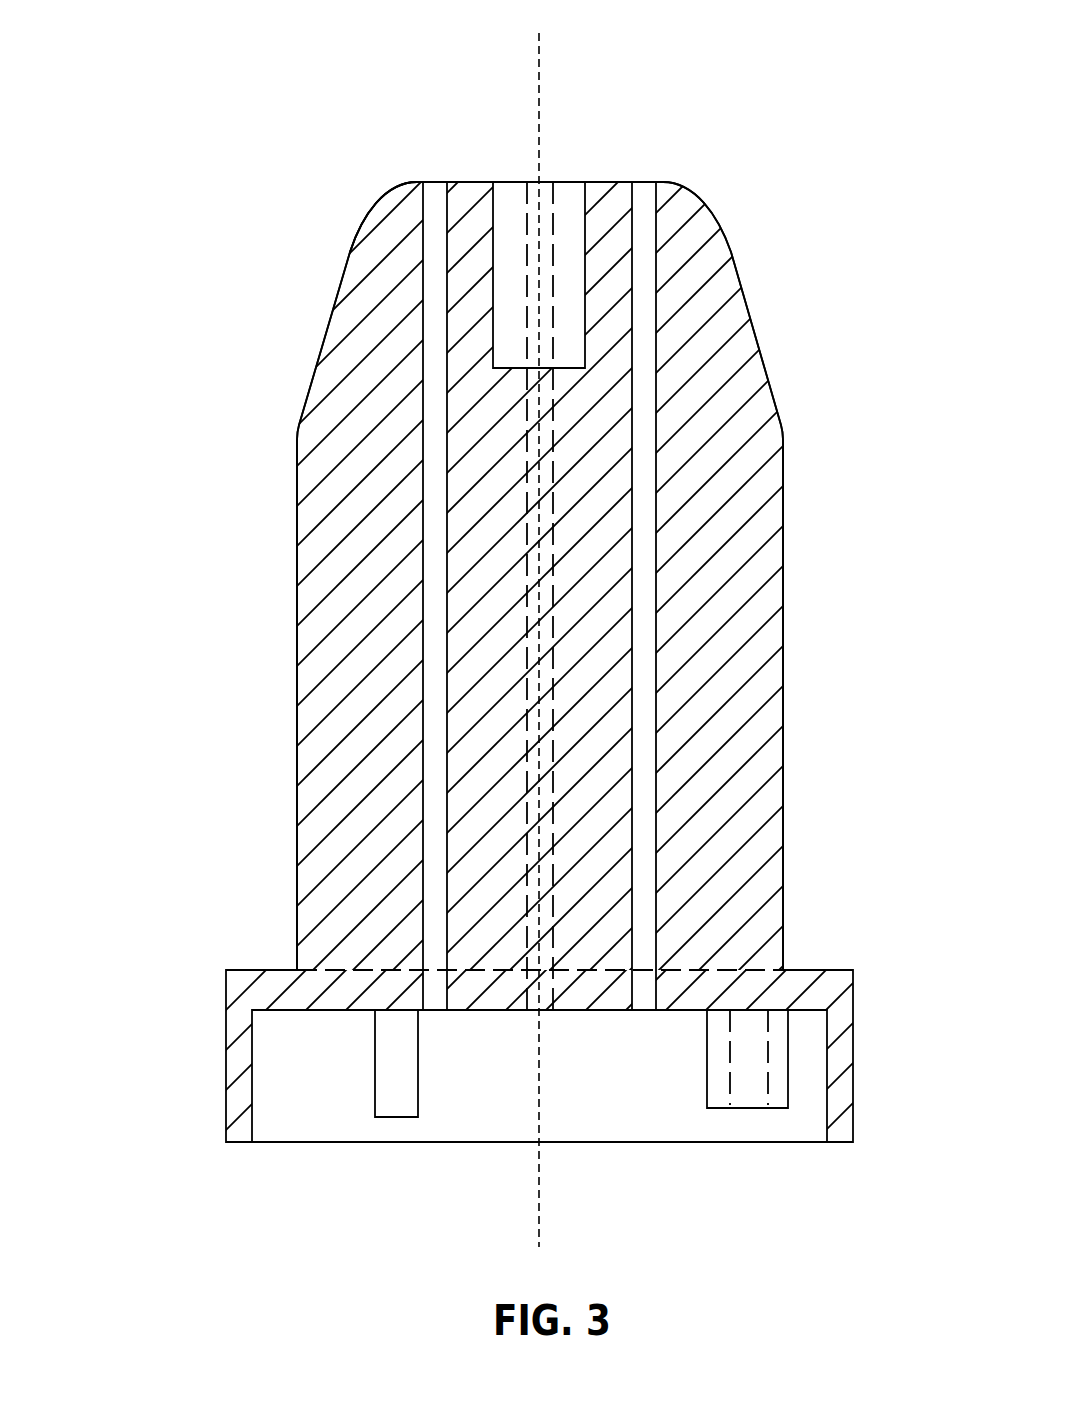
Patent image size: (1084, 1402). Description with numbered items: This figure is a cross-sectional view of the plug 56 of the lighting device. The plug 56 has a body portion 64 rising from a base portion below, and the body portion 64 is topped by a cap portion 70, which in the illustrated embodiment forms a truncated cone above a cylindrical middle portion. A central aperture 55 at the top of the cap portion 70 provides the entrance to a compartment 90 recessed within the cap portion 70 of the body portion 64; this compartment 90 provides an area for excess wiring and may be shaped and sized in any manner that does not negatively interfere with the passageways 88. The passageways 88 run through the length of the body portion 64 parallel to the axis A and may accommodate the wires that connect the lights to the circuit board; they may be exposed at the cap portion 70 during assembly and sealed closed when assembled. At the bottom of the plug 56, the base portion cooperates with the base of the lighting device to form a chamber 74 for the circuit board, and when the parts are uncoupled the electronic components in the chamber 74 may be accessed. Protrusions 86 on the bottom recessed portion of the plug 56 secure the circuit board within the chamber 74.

The axis A is at (538, 125).
The central aperture 55 is at (562, 172).
The plug 56 is at (262, 357).
The body portion 64 is at (228, 633).
The cap portion 70 is at (223, 138).
The chamber 74 is at (326, 1080).
The protrusions 86 is at (449, 1064).
The passageways 88 is at (425, 580).
The compartment 90 is at (510, 198).